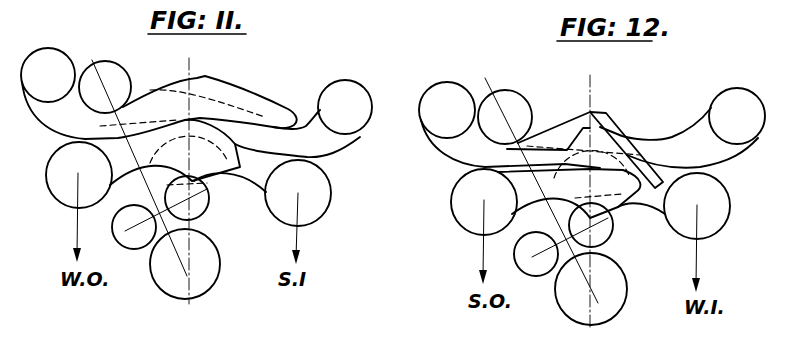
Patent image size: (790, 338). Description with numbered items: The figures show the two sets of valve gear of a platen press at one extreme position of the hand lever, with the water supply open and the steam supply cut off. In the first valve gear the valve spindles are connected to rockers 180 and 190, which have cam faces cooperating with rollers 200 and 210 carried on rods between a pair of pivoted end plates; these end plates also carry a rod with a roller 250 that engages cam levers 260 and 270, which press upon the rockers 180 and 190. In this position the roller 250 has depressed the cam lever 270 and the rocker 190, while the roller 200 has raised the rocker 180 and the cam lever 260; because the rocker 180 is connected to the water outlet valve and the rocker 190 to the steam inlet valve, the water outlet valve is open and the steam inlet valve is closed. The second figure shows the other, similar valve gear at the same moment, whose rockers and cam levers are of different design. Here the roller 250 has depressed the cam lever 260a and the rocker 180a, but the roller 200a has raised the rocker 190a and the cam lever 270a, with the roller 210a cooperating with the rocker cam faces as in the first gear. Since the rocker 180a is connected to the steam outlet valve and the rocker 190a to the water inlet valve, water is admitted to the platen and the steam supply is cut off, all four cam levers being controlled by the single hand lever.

In FIG. 11, the roller 250 is at (113, 73).
In FIG. 12, the roller 250 is at (511, 100).
In FIG. 11, the cam lever 260 is at (236, 93).
In FIG. 11, the cam lever 270 is at (322, 142).
In FIG. 11, the rocker 180 is at (164, 152).
In FIG. 11, the rocker 190 is at (252, 178).
In FIG. 11, the roller 200 is at (199, 208).
In FIG. 11, the roller 210 is at (135, 238).
In FIG. 12, the cam lever 260a is at (466, 151).
In FIG. 12, the cam lever 270a is at (650, 151).
In FIG. 12, the rocker 180a is at (581, 176).
In FIG. 12, the rocker 190a is at (643, 190).
In FIG. 12, the roller 200a is at (605, 230).
In FIG. 12, the roller 210a is at (536, 268).